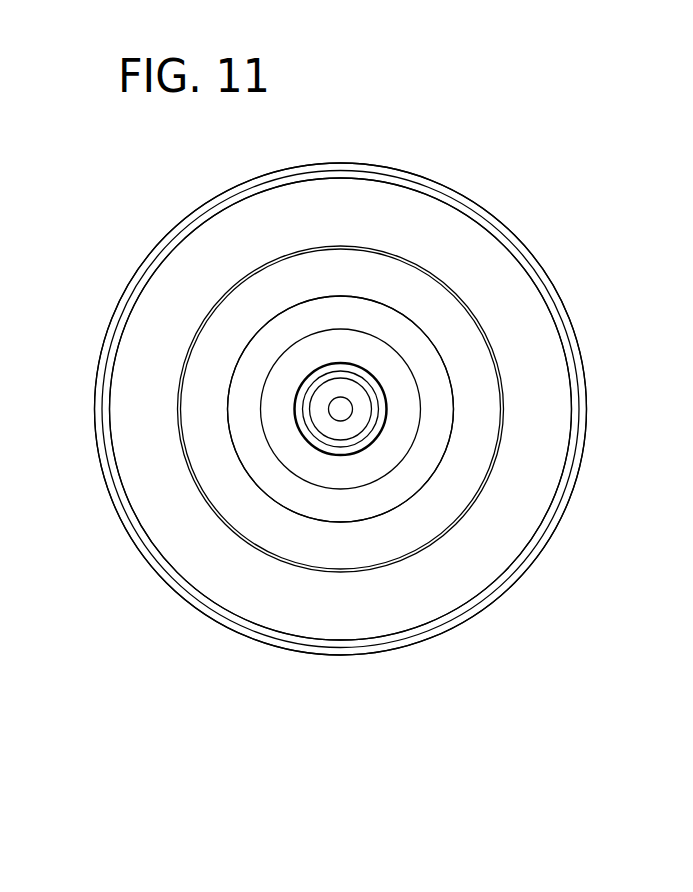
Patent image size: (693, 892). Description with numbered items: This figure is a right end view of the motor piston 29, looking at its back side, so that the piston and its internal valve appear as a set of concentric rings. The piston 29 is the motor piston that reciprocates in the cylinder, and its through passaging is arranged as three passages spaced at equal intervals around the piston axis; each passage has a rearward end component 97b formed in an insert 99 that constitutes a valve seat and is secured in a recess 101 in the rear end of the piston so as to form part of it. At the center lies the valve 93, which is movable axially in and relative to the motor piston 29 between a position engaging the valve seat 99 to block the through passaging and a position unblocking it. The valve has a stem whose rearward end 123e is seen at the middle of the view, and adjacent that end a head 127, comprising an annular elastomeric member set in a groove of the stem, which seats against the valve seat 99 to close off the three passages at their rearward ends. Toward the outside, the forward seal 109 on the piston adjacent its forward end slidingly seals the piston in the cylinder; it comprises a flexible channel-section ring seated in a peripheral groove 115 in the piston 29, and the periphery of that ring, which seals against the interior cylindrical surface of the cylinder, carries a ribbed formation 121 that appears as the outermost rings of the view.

The piston 29 is at (452, 202).
The valve 93 is at (305, 406).
The rearward end component 97b is at (317, 510).
The insert 99 is at (232, 305).
The recess 101 is at (340, 560).
The forward seal 109 is at (668, 277).
The peripheral groove 115 is at (590, 405).
The ribbed formation 121 is at (308, 163).
The rearward end 123e is at (358, 432).
The head 127 is at (243, 460).